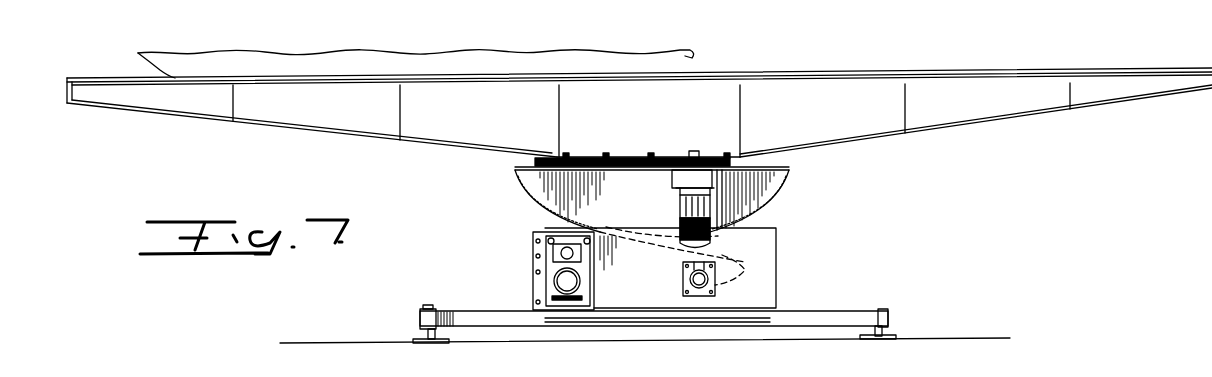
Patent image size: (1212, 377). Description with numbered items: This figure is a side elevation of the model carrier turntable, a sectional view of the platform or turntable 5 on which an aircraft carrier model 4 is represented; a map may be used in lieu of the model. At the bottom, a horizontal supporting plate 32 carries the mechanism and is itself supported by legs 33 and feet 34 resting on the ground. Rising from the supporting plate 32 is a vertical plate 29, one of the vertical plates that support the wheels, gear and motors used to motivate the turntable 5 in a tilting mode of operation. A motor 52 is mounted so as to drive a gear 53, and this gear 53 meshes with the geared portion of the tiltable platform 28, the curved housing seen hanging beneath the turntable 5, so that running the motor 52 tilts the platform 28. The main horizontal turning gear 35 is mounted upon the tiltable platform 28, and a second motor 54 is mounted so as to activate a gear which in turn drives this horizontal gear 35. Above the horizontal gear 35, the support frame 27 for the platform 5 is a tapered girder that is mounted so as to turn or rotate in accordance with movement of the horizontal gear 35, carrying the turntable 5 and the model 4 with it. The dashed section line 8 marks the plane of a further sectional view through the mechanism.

The aircraft carrier model 4 is at (645, 75).
The turntable 5 is at (1148, 68).
The section line 8- 8 is at (518, 65).
The support frame 27 is at (1004, 123).
The tiltable platform 28 is at (789, 169).
The vertical plate 29 is at (777, 269).
The horizontal supporting plate 32 is at (846, 310).
The legs 33 is at (425, 331).
The feet 34 is at (412, 340).
The horizontal gear 35 is at (535, 162).
The motor 52 is at (540, 275).
The gear 53 is at (550, 216).
The motor 54 is at (710, 236).